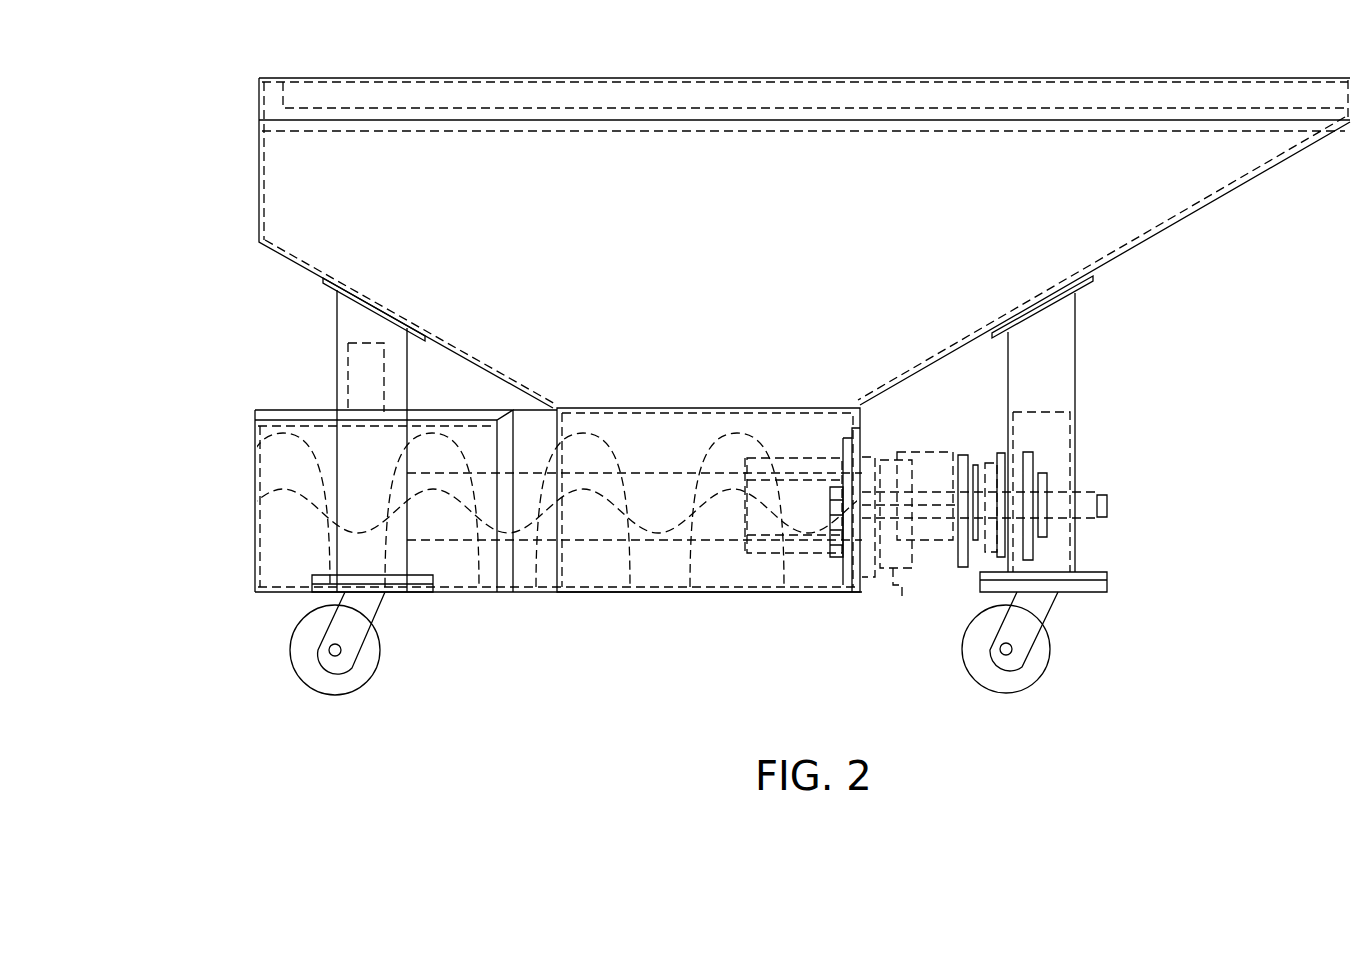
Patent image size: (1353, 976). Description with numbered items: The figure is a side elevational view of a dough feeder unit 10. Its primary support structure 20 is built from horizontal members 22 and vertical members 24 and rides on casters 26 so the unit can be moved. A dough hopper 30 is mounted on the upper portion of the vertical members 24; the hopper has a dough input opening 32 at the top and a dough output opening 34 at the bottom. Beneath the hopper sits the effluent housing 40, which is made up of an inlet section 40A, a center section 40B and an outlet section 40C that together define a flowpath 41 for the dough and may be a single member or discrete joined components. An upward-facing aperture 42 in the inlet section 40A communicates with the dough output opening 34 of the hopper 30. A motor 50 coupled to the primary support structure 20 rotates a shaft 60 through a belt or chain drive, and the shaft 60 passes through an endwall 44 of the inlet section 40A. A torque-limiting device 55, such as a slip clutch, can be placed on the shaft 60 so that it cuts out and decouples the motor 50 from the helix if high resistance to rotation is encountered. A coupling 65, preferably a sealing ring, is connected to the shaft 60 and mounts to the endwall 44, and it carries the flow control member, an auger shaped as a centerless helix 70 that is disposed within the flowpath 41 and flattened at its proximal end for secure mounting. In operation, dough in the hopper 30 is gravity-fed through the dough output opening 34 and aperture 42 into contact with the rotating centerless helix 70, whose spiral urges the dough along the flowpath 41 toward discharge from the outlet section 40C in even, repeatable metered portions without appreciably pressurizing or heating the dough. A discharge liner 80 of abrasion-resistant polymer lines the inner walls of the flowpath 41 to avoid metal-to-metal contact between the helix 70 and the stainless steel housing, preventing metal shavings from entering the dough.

The dough feeder unit 10 is at (150, 176).
The primary support structure 20 is at (1092, 363).
The horizontal members 22 is at (348, 378).
The vertical members 24 is at (1066, 325).
The casters 26 is at (1050, 650).
The dough hopper 30 is at (1203, 214).
The dough input opening 32 is at (818, 102).
The dough output opening 34 is at (650, 410).
The effluent housing 40 is at (528, 592).
The inlet section 40A is at (745, 580).
The center section 40B is at (455, 580).
The outlet section 40C is at (255, 525).
The flowpath 41 is at (275, 575).
The upward-facing aperture 42 is at (722, 410).
The endwall 44 is at (856, 424).
The motor 50 is at (893, 588).
The torque-limiting device 55 is at (1030, 462).
The shaft 60 is at (937, 490).
The coupling 65 is at (847, 590).
The centerless helix 70 is at (658, 583).
The discharge liner 80 is at (268, 585).